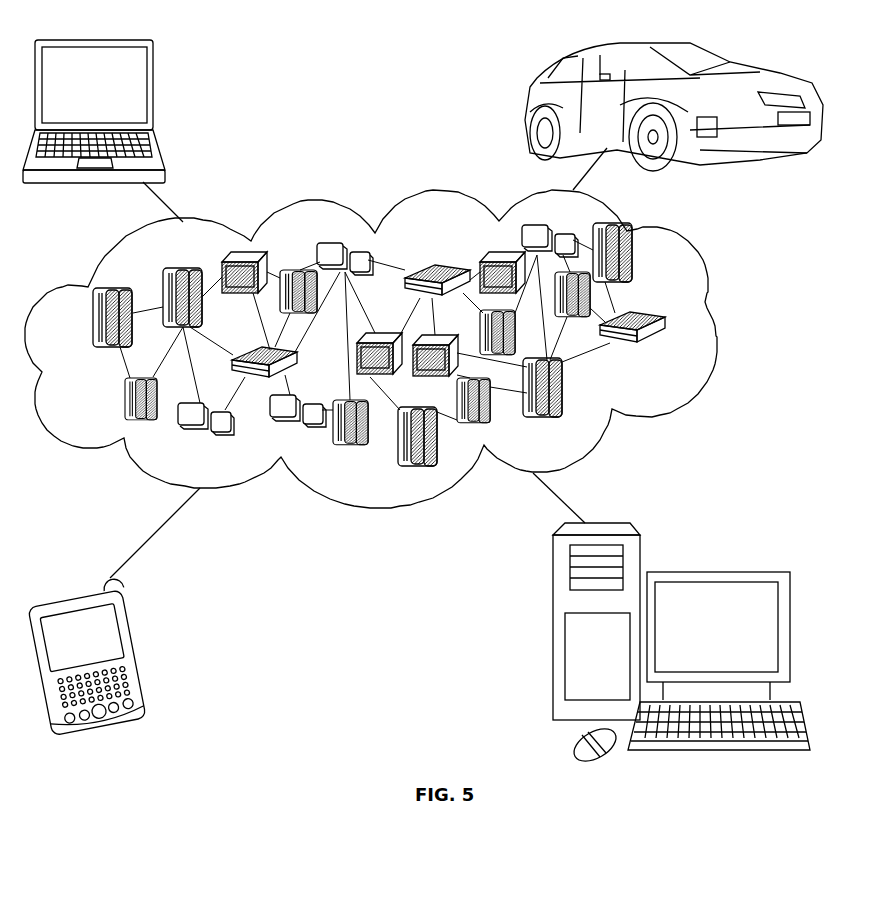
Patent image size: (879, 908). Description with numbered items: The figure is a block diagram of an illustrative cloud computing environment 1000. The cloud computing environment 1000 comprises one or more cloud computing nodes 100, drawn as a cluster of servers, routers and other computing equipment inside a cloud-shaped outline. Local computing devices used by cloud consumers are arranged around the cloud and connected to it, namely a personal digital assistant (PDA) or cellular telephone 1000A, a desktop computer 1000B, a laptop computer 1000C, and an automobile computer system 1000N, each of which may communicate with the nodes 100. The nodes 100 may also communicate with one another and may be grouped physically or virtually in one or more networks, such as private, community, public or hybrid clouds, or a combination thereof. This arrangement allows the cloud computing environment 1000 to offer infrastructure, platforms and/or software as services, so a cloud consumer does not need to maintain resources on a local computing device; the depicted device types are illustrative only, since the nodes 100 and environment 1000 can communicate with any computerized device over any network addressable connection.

The cloud computing nodes 100 is at (672, 354).
The cloud computing environment 1000 is at (717, 327).
The personal digital assistant (PDA) or cellular telephone 1000A is at (145, 653).
The desktop computer 1000B is at (723, 555).
The laptop computer 1000C is at (152, 93).
The automobile computer system 1000N is at (528, 112).